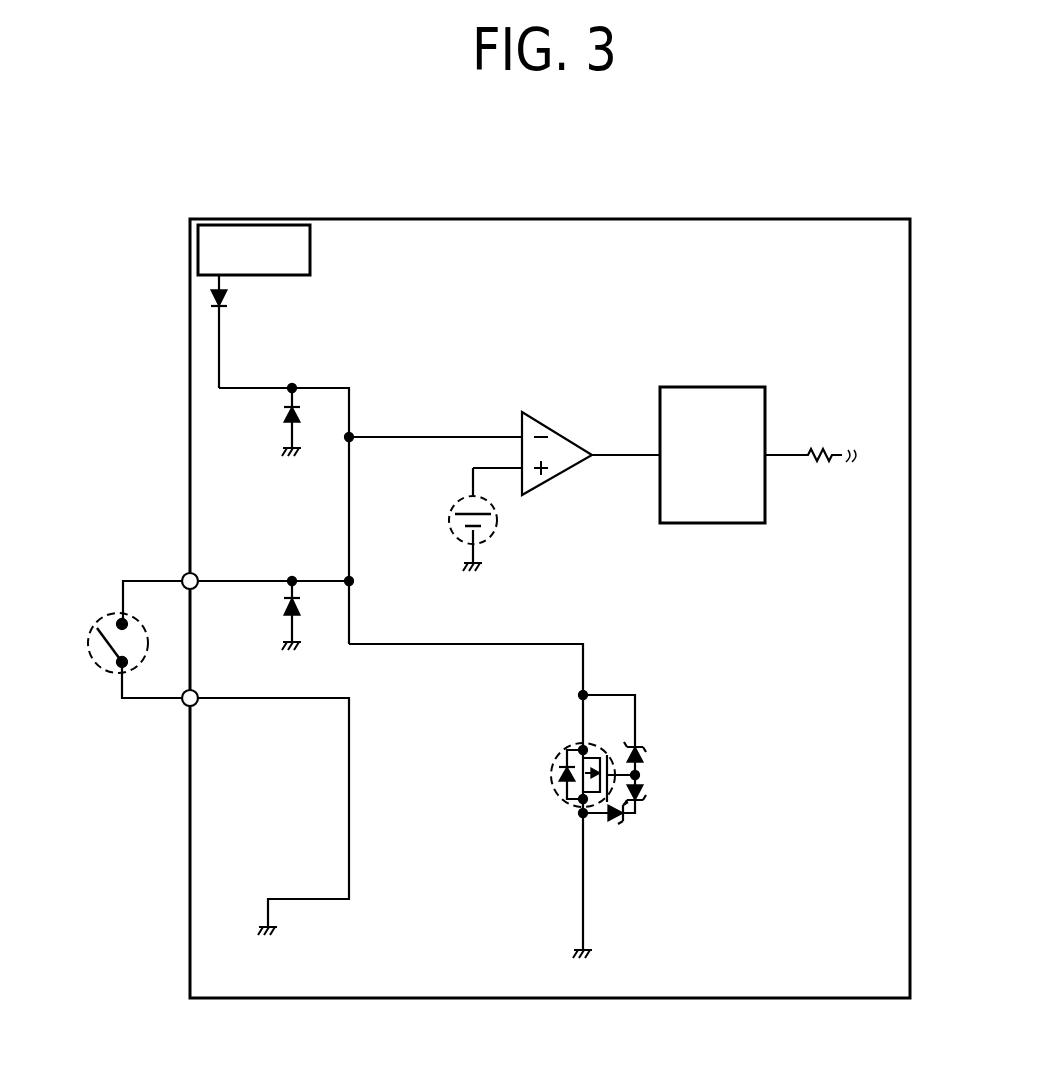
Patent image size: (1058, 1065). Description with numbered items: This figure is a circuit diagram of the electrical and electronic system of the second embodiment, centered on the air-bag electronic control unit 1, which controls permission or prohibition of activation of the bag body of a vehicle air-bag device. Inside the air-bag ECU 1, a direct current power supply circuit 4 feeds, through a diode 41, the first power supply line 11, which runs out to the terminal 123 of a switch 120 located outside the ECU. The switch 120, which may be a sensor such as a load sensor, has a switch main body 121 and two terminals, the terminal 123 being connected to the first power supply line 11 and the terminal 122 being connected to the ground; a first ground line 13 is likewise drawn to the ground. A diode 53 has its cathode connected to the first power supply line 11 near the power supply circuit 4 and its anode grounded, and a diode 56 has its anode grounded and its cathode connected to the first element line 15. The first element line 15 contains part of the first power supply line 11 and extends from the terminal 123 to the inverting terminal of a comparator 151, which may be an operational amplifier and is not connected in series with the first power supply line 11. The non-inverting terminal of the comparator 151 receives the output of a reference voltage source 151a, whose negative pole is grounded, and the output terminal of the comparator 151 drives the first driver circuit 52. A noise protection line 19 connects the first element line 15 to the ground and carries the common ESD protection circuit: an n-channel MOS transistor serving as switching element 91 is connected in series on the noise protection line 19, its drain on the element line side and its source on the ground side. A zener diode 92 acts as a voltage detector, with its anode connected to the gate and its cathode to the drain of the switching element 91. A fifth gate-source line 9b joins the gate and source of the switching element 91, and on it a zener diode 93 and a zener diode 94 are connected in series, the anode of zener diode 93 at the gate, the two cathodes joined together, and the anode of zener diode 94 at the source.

The air-bag electronic control unit 1 is at (495, 219).
The direct current power supply circuit 4 is at (312, 250).
The diode 41 is at (212, 297).
The first power supply line 11 is at (258, 388).
The diode 53 is at (285, 414).
The first element line 15 is at (401, 437).
The comparator 151 is at (553, 430).
The reference voltage source 151a is at (460, 544).
The first driver circuit 52 is at (766, 408).
The diode 56 is at (285, 604).
The terminal 123 is at (183, 575).
The terminal 122 is at (183, 705).
The switch main body 121 is at (103, 612).
The switch 120 is at (115, 662).
The first ground line 13 is at (296, 899).
The noise protection line 19 is at (421, 645).
The switching element 91 is at (563, 752).
The zener diode 92 is at (643, 752).
The zener diode 93 is at (643, 794).
The zener diode 94 is at (618, 819).
The fifth gate-source line 9b is at (611, 777).